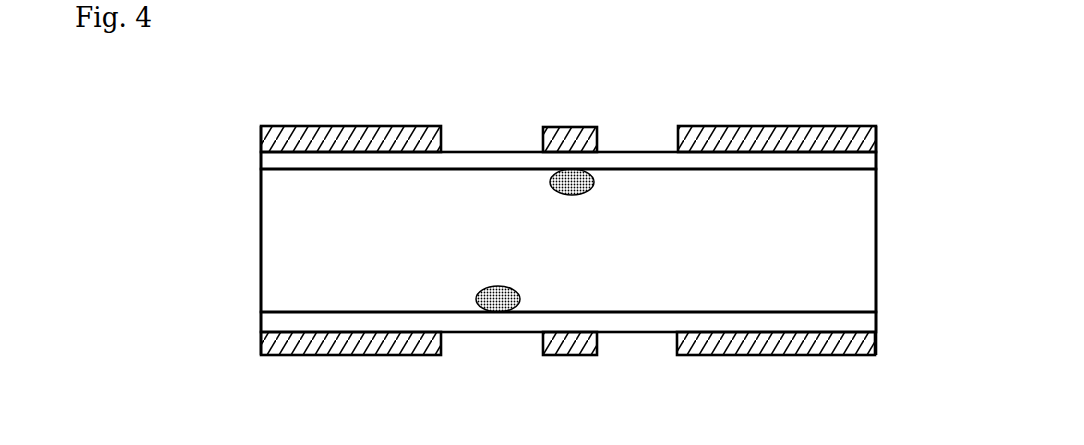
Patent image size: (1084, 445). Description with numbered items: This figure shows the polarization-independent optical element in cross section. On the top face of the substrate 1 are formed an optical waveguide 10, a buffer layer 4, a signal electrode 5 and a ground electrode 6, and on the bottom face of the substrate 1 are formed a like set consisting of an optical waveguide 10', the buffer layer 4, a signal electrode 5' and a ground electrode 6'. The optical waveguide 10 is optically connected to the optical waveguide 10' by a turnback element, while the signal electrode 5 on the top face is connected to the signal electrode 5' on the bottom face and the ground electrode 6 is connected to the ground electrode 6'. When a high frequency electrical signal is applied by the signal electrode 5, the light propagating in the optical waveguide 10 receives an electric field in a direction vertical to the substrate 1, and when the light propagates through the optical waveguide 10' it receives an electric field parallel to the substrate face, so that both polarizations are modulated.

The substrate 1 is at (823, 235).
The buffer layer 4 is at (528, 242).
The signal electrode 5 is at (601, 103).
The signal electrode 5' is at (588, 372).
The ground electrode 6 is at (568, 103).
The ground electrode 6' is at (578, 377).
The optical waveguide 10 is at (518, 136).
The optical waveguide 10' is at (482, 349).